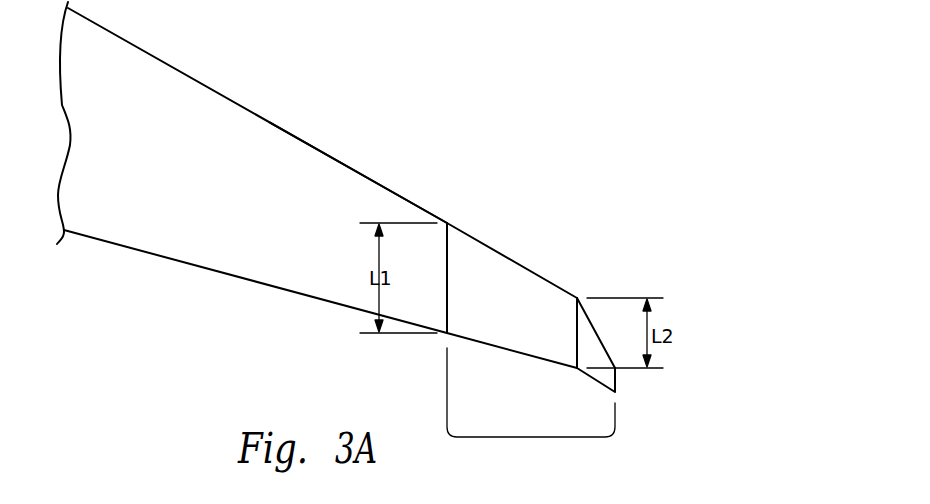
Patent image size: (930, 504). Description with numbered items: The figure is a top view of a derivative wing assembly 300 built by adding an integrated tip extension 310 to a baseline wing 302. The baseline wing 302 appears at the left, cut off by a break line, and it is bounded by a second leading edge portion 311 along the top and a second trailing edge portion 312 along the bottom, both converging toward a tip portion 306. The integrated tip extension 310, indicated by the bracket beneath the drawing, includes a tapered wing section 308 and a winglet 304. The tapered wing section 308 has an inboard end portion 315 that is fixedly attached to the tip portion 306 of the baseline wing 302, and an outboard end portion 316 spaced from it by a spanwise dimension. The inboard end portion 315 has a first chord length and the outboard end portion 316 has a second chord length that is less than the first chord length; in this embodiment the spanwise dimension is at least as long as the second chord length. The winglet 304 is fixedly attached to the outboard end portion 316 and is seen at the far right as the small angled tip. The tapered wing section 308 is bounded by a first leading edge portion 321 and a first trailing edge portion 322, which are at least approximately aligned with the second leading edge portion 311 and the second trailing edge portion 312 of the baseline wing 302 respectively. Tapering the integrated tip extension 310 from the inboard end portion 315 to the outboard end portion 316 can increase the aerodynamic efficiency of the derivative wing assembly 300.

The derivative wing assembly 300 is at (483, 70).
The baseline wing 302 is at (187, 107).
The winglet 304 is at (615, 382).
The tip portion 306 is at (447, 254).
The tapered wing section 308 is at (537, 290).
The integrated tip extension 310 is at (530, 437).
The second leading edge portion 311 is at (290, 128).
The second trailing edge portion 312 is at (174, 258).
The inboard end portion 315 is at (447, 305).
The outboard end portion 316 is at (578, 322).
The first leading edge portion 321 is at (505, 256).
The first trailing edge portion 322 is at (528, 355).